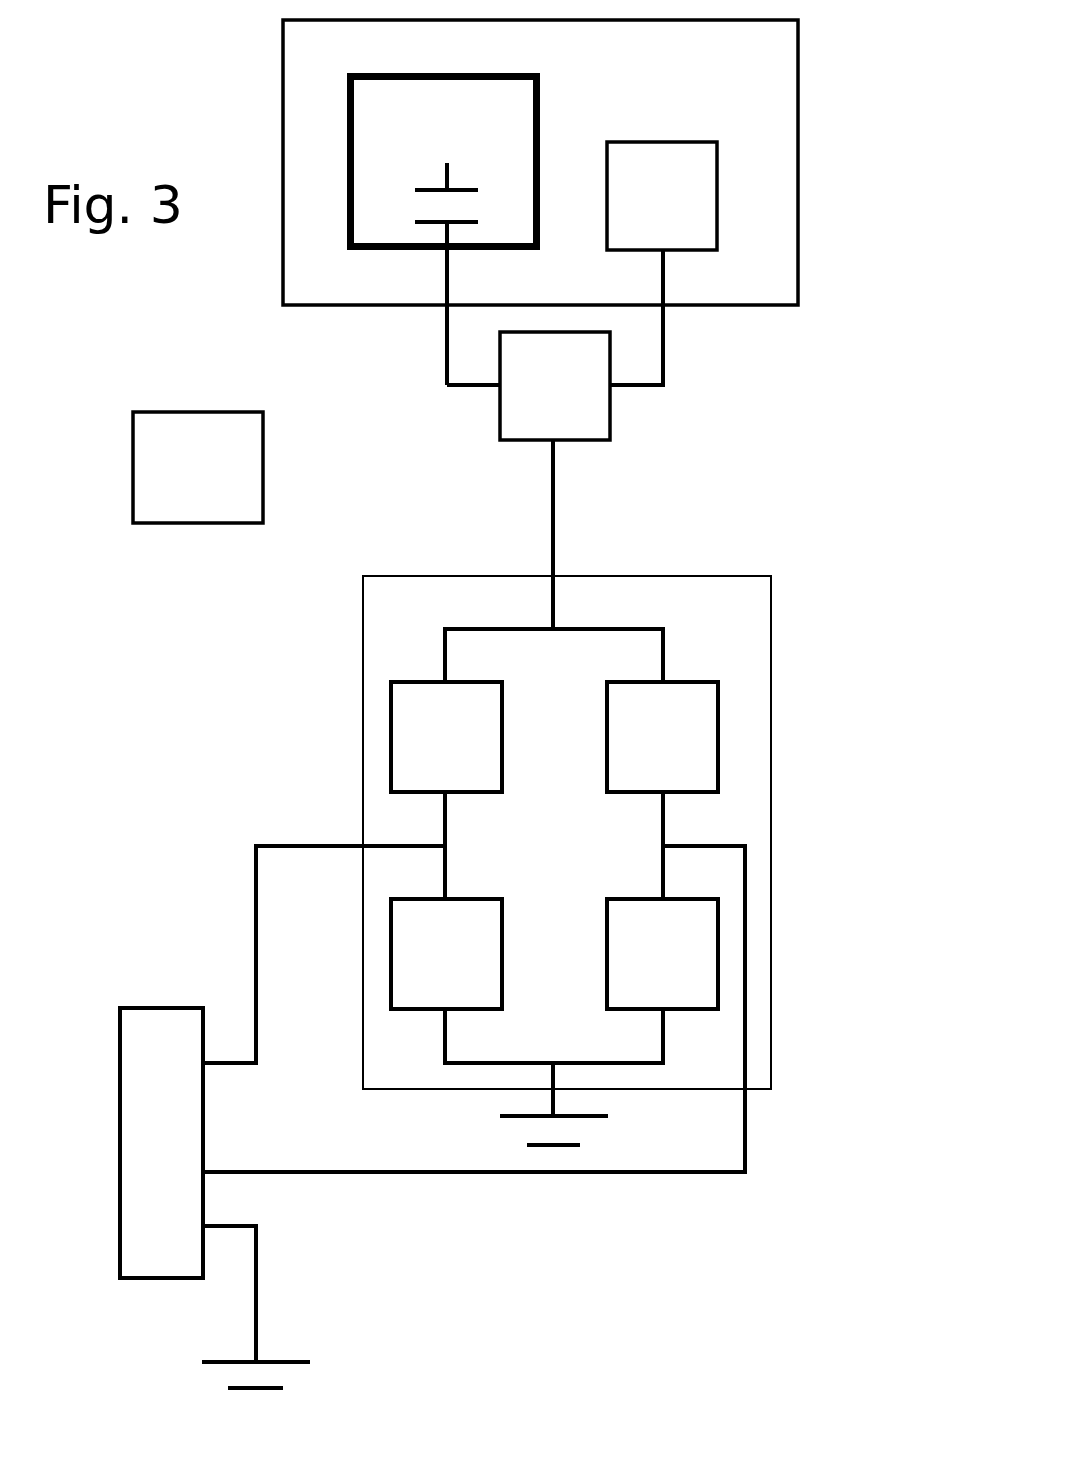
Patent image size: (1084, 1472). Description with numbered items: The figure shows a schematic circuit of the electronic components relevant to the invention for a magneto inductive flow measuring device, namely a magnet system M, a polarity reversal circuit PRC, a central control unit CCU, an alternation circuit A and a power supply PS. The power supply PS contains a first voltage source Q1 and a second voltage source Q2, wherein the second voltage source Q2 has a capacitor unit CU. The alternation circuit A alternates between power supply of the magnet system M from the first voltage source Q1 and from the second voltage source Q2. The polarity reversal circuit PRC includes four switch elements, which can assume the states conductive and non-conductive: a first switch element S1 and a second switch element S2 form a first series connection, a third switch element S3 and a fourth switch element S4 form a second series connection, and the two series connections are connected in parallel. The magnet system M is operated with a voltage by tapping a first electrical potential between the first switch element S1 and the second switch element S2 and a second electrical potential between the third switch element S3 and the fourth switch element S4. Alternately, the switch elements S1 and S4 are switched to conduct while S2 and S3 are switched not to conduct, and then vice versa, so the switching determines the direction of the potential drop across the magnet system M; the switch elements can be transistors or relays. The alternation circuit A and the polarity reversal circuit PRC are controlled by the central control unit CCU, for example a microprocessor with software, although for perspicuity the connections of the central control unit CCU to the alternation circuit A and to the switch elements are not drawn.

The power supply PS is at (798, 223).
The second voltage source Q2 is at (444, 162).
The capacitor unit CU is at (423, 225).
The first voltage source Q1 is at (662, 196).
The alternation circuit A is at (555, 386).
The central control unit CCU is at (198, 467).
The polarity reversal circuit PRC is at (718, 575).
The first switch element S1 is at (446, 737).
The second switch element S2 is at (446, 954).
The third switch element S3 is at (662, 737).
The fourth switch element S4 is at (662, 954).
The magnet system M is at (161, 1143).